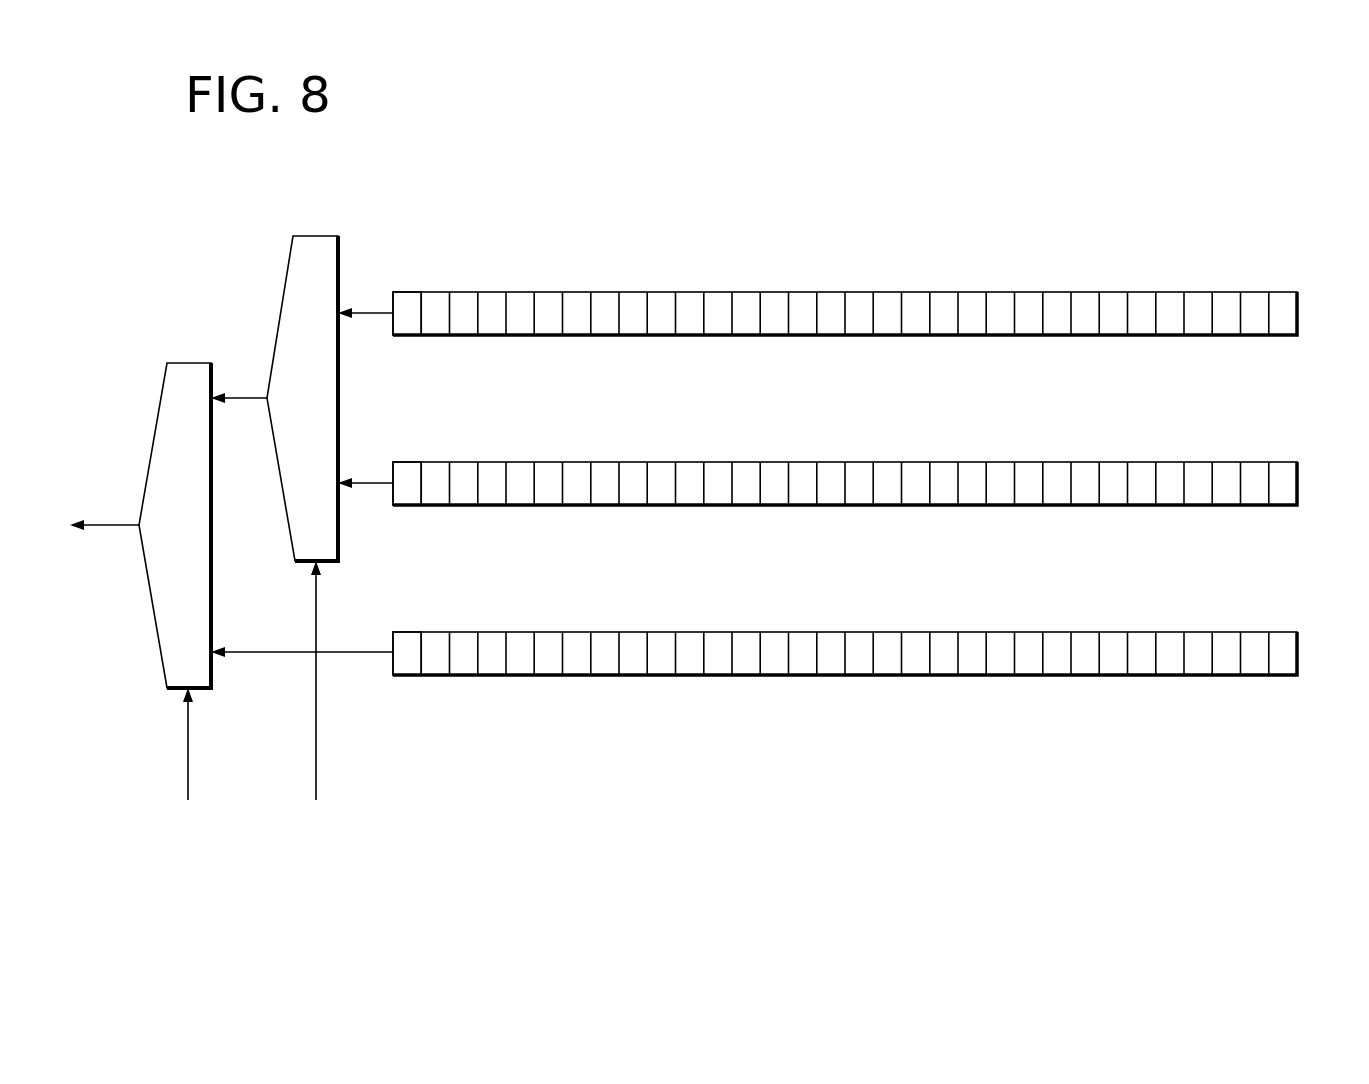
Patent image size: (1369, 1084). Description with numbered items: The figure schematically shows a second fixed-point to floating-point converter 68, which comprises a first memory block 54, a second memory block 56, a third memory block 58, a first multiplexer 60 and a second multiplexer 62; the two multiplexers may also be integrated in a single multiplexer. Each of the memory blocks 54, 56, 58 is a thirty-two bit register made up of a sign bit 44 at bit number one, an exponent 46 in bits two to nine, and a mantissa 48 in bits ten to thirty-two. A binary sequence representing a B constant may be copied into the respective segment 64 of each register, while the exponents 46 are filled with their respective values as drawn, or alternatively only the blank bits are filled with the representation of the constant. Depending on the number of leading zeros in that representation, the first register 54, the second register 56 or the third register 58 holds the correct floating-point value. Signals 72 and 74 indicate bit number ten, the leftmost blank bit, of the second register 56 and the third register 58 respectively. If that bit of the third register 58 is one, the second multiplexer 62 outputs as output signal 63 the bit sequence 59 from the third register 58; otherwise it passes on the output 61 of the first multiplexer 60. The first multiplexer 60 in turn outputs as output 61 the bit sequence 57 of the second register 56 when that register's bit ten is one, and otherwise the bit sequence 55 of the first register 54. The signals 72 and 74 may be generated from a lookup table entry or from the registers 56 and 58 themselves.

The sign bit 44 is at (405, 338).
The exponent 46 is at (648, 348).
The mantissa 48 is at (650, 348).
The first memory block 54 is at (1298, 313).
The bit sequence 55 is at (356, 312).
The second memory block 56 is at (1298, 483).
The bit sequence 57 is at (356, 482).
The third memory block 58 is at (1298, 653).
The bit sequence 59 is at (344, 651).
The first multiplexer 60 is at (317, 235).
The output 61 is at (242, 397).
The second multiplexer 62 is at (187, 362).
The output signal 63 is at (116, 523).
The segment 64 is at (565, 278).
The second fixed-point to floating-point converter 68 is at (555, 198).
The signal 72 is at (315, 758).
The signal 74 is at (187, 758).